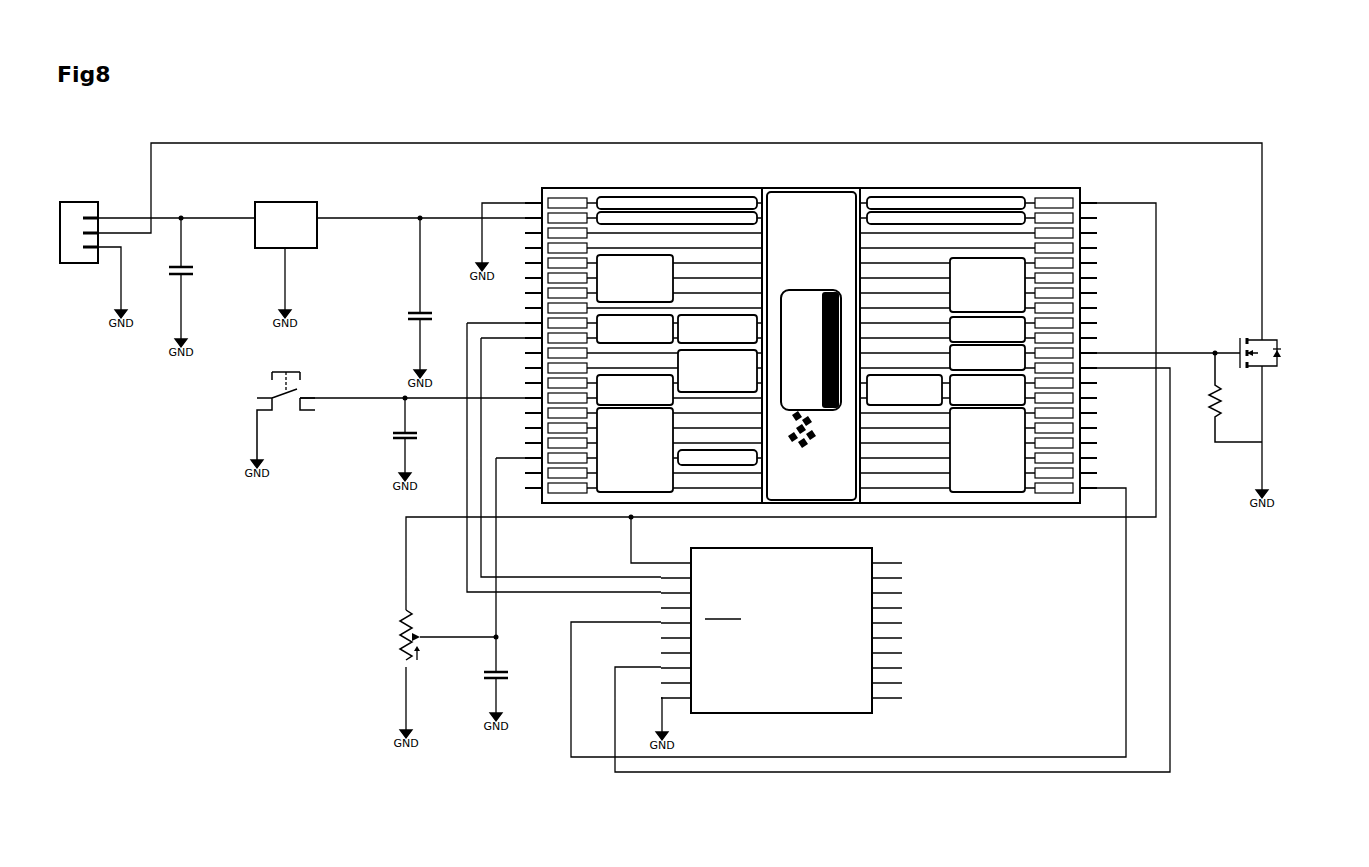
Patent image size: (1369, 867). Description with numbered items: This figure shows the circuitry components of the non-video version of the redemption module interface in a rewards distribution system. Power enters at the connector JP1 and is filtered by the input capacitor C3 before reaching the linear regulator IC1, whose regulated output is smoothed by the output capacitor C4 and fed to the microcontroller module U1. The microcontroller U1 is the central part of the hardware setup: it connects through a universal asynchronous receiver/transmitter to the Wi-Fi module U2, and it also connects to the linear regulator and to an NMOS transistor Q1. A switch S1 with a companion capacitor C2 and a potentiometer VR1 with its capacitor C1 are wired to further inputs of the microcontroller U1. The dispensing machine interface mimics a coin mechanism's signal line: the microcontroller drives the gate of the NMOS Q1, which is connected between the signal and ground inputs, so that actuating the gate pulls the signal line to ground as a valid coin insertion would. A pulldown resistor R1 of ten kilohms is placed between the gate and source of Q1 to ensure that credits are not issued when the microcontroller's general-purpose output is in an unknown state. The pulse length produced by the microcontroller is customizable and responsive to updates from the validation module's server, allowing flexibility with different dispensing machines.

The power input connector JP1 is at (97, 257).
The input capacitor C3 is at (191, 288).
The MC7805CTG voltage regulator IC1 is at (314, 266).
The regulator output capacitor C4 is at (430, 304).
The pushbutton switch S1 is at (279, 415).
The switch debounce capacitor C2 is at (422, 445).
The mbed LPC1768 microcontroller module U1 is at (783, 338).
The FQP30N06L MOSFET Q1 is at (1301, 417).
The gate pull-down resistor R1 is at (1229, 397).
The potentiometer VR1 is at (438, 680).
The filter capacitor C1 is at (512, 694).
The RN-XV wireless module U2 is at (775, 642).